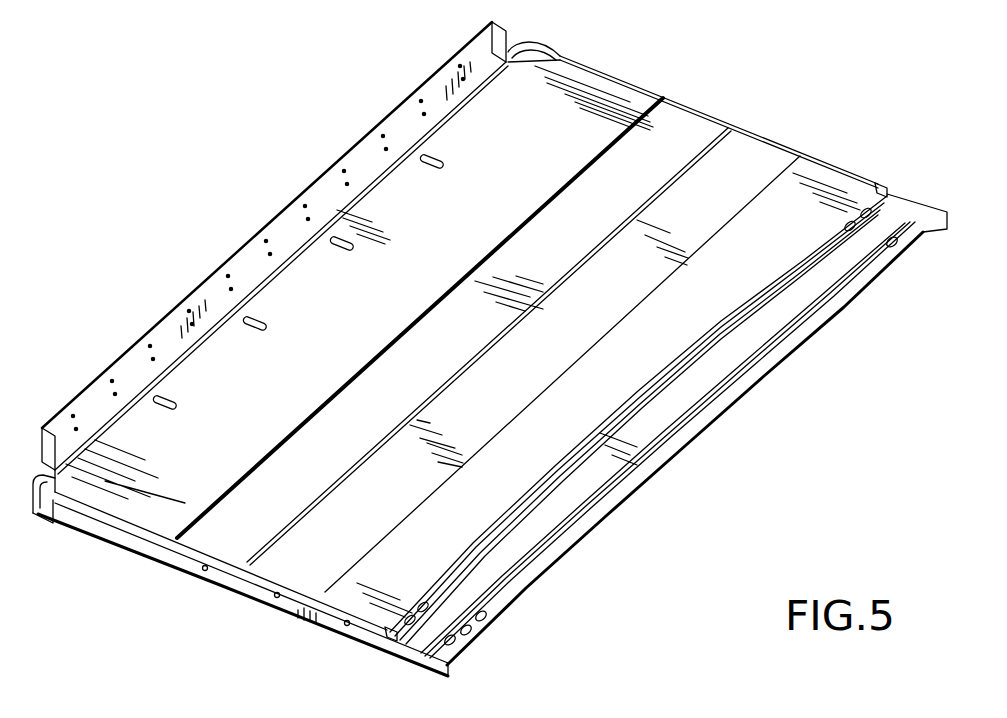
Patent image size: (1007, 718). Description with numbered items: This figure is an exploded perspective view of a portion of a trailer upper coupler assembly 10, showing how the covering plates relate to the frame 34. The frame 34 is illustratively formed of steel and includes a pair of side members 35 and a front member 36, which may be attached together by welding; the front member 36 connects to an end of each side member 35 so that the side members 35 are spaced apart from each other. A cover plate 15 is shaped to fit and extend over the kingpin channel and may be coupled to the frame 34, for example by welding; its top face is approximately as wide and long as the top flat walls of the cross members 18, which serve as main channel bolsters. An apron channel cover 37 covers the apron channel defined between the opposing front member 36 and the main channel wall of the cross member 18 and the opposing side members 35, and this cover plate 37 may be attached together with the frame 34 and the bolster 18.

The upper coupler assembly 10 is at (108, 197).
The cover plate 15 is at (752, 152).
The cross member 18 is at (683, 123).
The frame 34 is at (161, 587).
The side member 35 is at (668, 98).
The front member 36 is at (284, 234).
The apron channel cover 37 is at (581, 77).